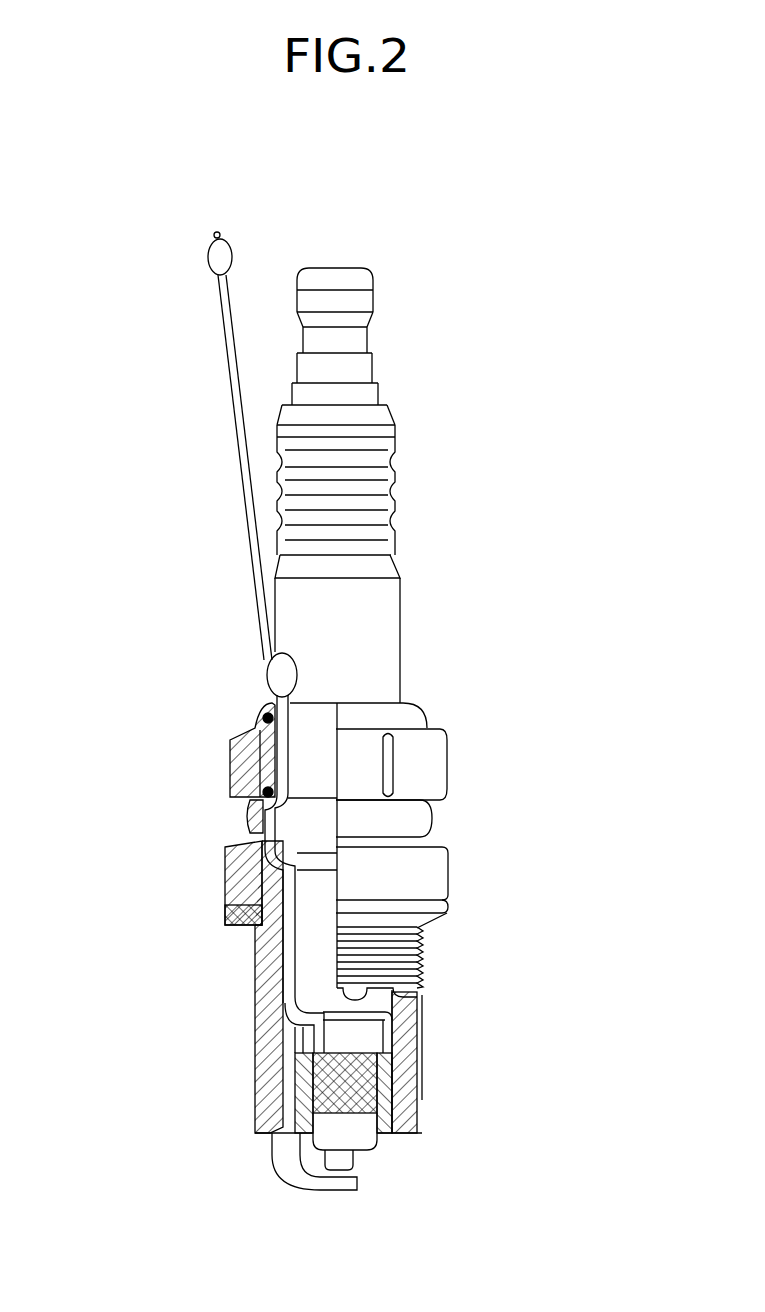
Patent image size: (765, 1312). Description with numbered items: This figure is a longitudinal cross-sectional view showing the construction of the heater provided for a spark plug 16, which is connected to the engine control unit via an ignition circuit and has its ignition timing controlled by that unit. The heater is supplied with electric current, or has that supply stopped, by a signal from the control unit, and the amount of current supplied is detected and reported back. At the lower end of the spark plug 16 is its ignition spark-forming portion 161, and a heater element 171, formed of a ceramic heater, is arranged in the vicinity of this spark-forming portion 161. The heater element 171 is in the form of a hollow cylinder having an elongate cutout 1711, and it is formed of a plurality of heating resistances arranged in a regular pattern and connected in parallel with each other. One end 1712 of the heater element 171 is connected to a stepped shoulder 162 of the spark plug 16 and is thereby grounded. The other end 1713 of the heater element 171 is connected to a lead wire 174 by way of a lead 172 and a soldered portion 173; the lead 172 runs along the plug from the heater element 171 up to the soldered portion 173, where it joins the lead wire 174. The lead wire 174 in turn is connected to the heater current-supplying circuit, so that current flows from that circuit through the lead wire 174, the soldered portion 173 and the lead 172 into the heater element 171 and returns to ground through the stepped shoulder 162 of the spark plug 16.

The spark plug 16 is at (412, 608).
The ignition spark-forming portion 161 is at (357, 1160).
The stepped shoulder 162 is at (290, 1030).
The heater element 171 is at (375, 1102).
The elongate cutout 1711 is at (308, 1122).
The one end of the heater element 1712 is at (280, 1098).
The other end of the heater element 1713 is at (293, 1065).
The lead 172 is at (290, 972).
The soldered portion 173 is at (267, 680).
The lead wire 174 is at (240, 462).